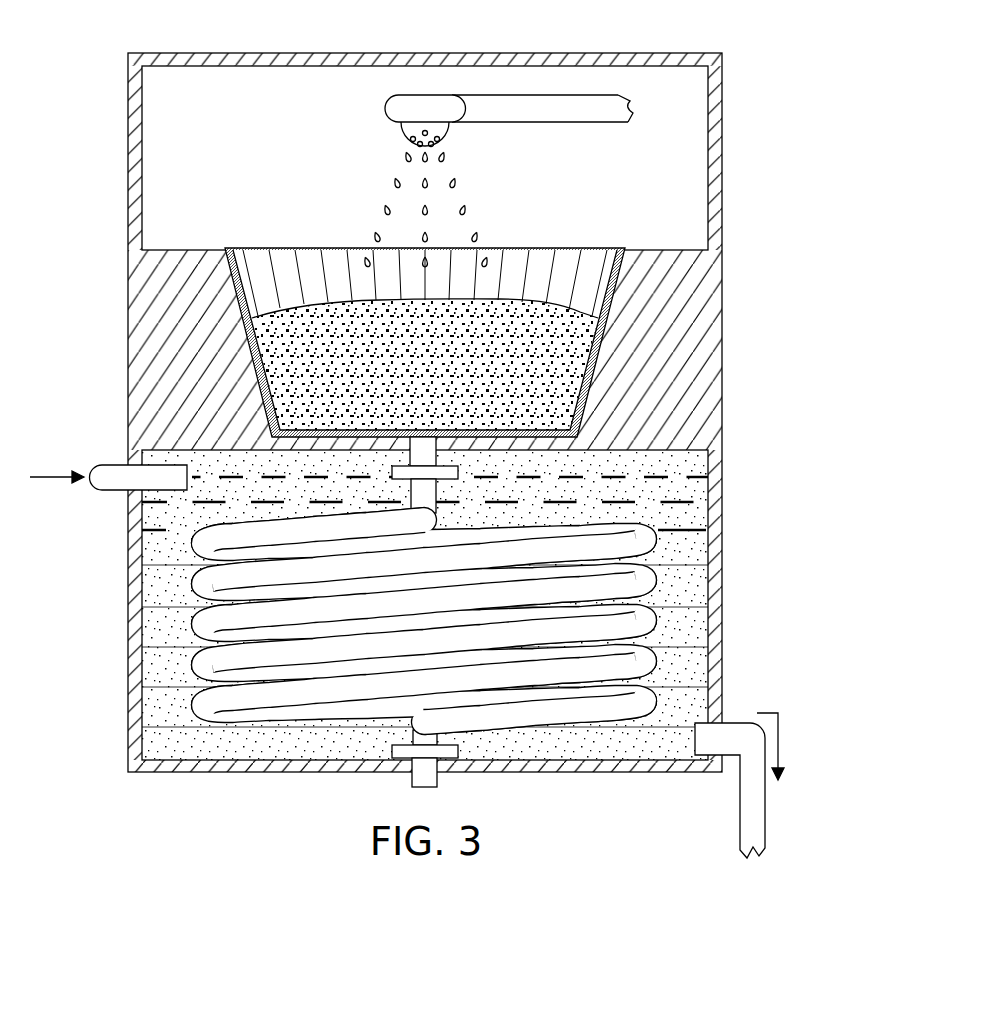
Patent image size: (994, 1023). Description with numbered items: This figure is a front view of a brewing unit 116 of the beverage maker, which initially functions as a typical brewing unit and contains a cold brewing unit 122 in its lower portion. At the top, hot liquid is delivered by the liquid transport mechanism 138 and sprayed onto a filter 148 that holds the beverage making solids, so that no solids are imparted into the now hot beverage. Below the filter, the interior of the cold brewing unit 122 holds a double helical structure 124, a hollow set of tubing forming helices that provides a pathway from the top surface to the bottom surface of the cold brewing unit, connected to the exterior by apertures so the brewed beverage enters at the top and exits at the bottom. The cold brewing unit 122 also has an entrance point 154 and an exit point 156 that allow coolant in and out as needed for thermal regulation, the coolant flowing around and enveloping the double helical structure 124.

The brewing unit 116 is at (793, 53).
The cold brewing unit 122 is at (96, 622).
The double helical structure 124 is at (205, 706).
The liquid transport mechanism 138 is at (511, 105).
The filter 148 is at (250, 311).
The entrance point 154 is at (105, 463).
The exit point 156 is at (739, 772).